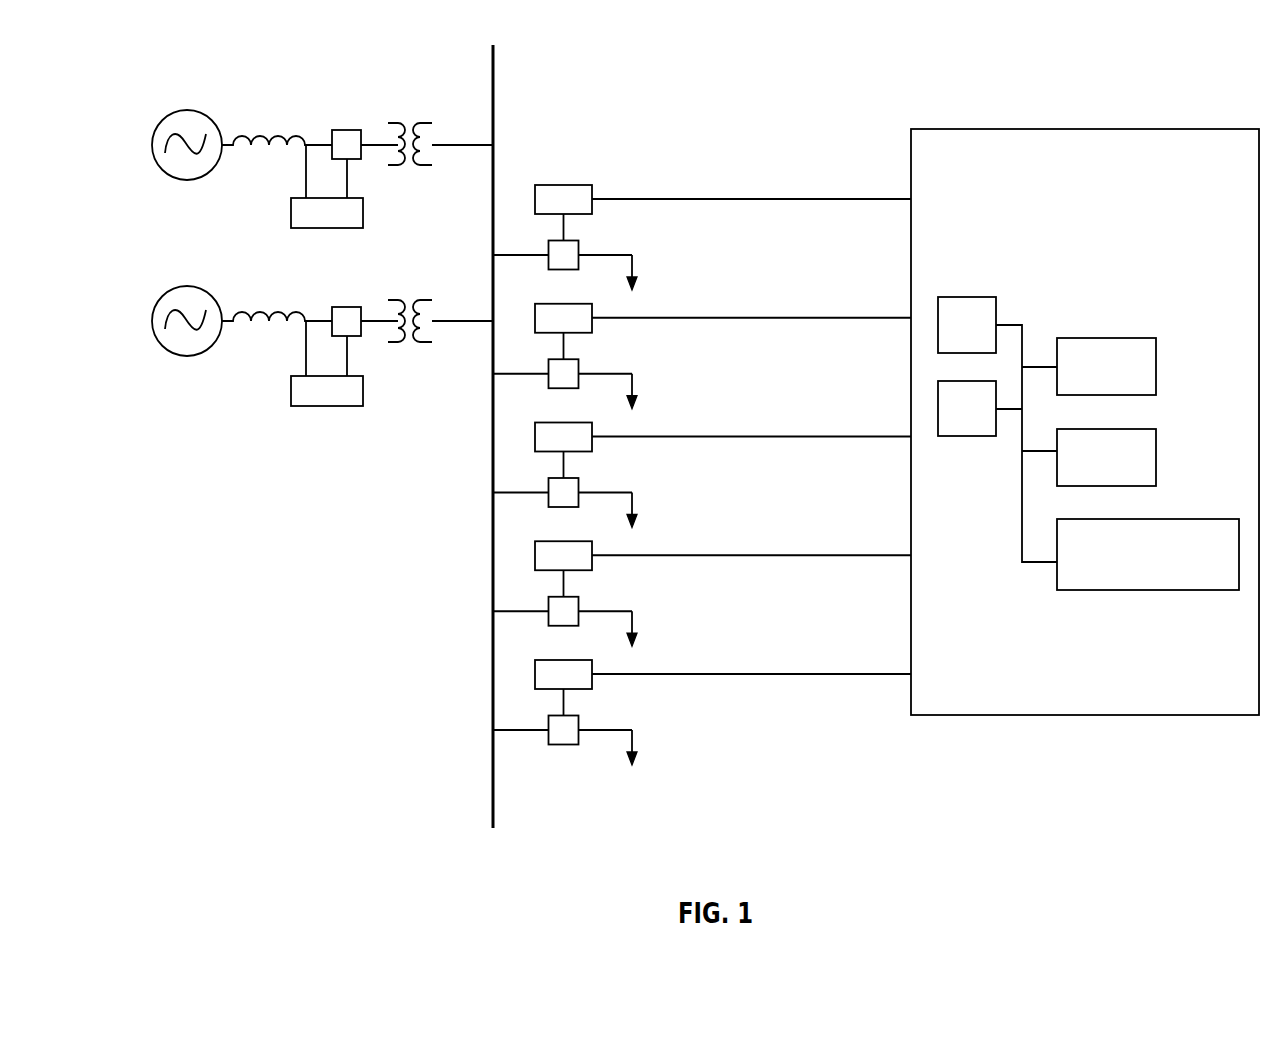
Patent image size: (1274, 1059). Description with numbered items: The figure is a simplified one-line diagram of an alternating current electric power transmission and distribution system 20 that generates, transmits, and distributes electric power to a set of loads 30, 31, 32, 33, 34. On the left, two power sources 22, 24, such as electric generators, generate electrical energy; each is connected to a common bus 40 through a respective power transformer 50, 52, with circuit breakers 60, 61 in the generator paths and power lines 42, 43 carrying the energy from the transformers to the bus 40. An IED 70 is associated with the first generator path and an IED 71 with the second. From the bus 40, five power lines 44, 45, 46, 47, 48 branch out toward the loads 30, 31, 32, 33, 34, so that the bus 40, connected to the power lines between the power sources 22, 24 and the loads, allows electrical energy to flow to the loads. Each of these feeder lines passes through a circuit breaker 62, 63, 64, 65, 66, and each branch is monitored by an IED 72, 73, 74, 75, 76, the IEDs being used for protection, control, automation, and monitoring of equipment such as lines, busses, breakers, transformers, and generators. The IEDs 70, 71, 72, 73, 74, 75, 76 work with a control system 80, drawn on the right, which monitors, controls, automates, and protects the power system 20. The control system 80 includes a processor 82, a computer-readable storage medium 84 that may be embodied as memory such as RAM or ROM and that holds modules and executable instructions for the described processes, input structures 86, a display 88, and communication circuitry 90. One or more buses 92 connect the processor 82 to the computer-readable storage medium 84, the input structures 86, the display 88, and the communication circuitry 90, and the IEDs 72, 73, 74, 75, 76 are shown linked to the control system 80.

The electric power transmission and distribution system 20 is at (779, 40).
The power source 22 is at (190, 108).
The power source 24 is at (181, 355).
The load 30 is at (634, 263).
The load 31 is at (670, 382).
The load 32 is at (670, 501).
The load 33 is at (670, 619).
The load 34 is at (670, 738).
The bus 40 is at (493, 783).
The power line 42 is at (477, 146).
The power line 43 is at (471, 323).
The power line 44 is at (499, 254).
The power line 45 is at (562, 354).
The power line 46 is at (562, 473).
The power line 47 is at (562, 591).
The power line 48 is at (562, 710).
The power transformer 50 is at (398, 122).
The power transformer 52 is at (399, 300).
The circuit breaker 60 is at (346, 130).
The circuit breaker 61 is at (346, 307).
The circuit breaker 62 is at (579, 241).
The circuit breaker 63 is at (583, 362).
The circuit breaker 64 is at (583, 481).
The circuit breaker 65 is at (583, 599).
The circuit breaker 66 is at (583, 718).
The IED 70 is at (293, 228).
The IED 71 is at (293, 406).
The IED 72 is at (541, 185).
The IED 73 is at (710, 316).
The IED 74 is at (710, 435).
The IED 75 is at (710, 553).
The IED 76 is at (710, 672).
The control system 80 is at (980, 716).
The processor 82 is at (953, 273).
The computer-readable storage medium 84 is at (965, 437).
The input structures 86 is at (1143, 338).
The display 88 is at (1150, 429).
The communication circuitry 90 is at (1200, 519).
The bus 92 is at (1022, 527).